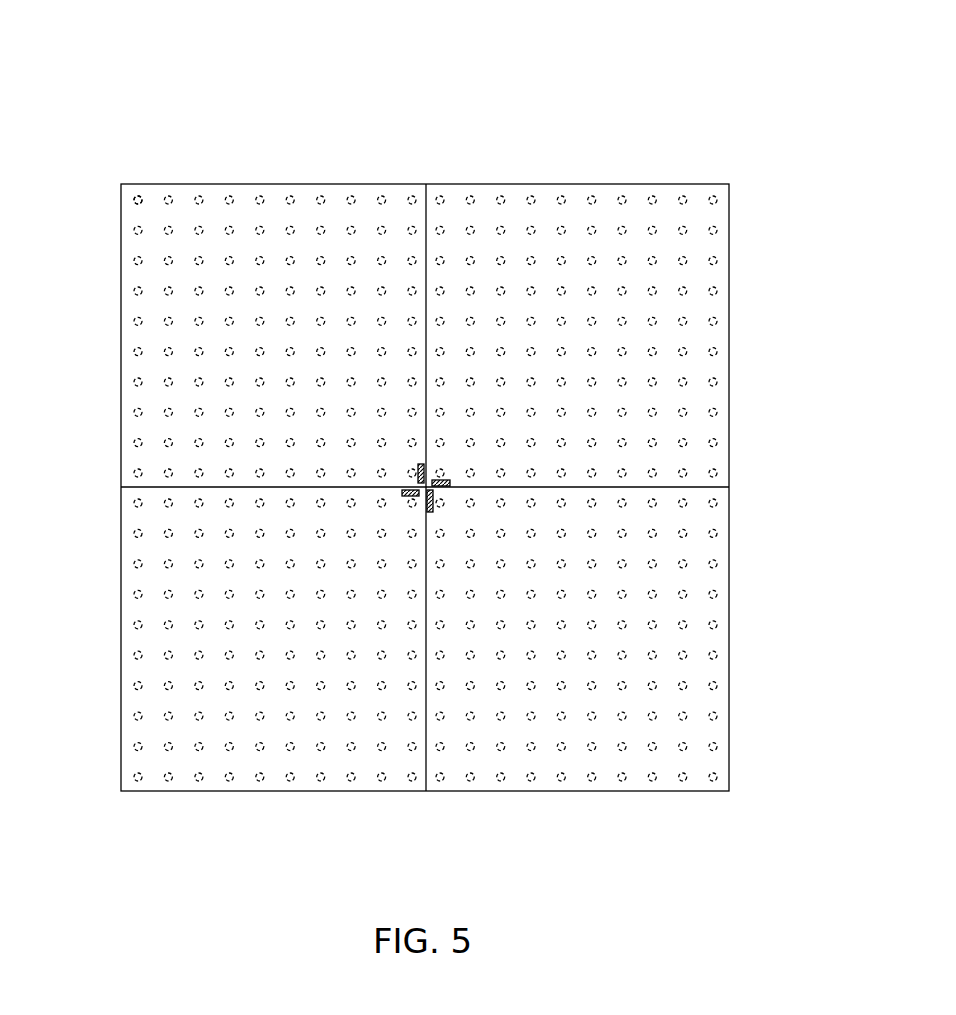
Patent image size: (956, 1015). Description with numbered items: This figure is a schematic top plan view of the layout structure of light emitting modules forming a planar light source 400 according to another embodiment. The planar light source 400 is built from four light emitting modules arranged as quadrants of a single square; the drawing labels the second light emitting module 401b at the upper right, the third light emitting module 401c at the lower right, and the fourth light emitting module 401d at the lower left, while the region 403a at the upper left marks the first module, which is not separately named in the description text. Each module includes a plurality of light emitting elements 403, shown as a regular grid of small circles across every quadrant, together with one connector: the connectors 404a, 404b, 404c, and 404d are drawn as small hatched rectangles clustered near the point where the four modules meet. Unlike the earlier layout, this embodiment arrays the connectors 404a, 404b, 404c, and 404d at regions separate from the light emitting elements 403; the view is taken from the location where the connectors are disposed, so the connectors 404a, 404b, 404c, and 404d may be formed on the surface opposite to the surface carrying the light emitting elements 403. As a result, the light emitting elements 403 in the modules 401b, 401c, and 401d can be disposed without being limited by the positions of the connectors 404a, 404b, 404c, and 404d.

The planar light source 400 is at (460, 86).
The light emitting elements 403 is at (138, 198).
The first sub-panel region 403a is at (130, 213).
The second light emitting module 401b is at (720, 215).
The third light emitting module 401c is at (715, 697).
The fourth light emitting module 401d is at (170, 782).
The connector 404a is at (418, 463).
The connector 404b is at (448, 480).
The connector 404c is at (432, 512).
The connector 404d is at (405, 497).